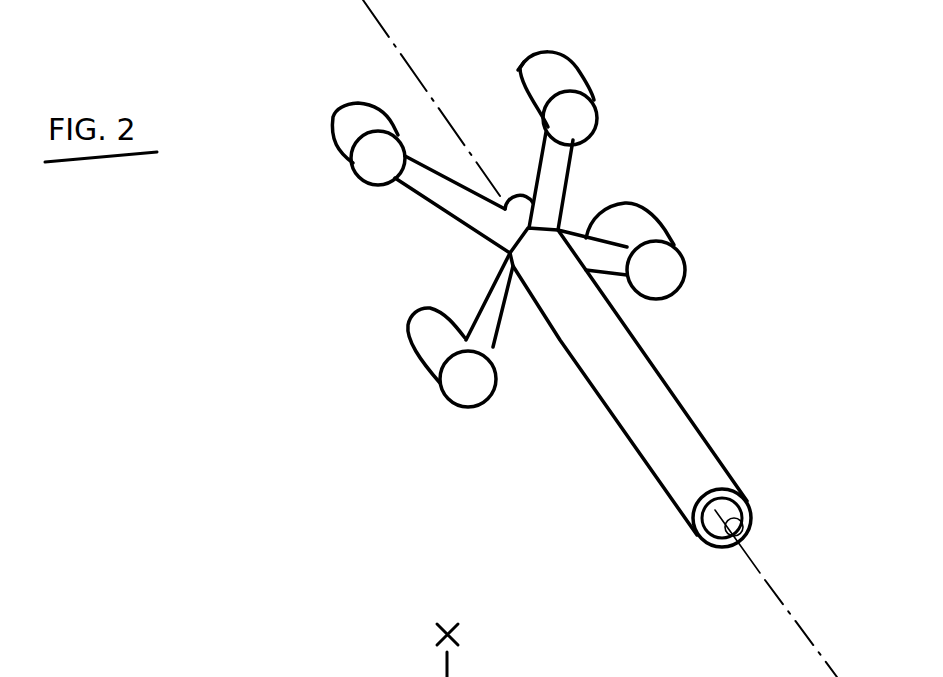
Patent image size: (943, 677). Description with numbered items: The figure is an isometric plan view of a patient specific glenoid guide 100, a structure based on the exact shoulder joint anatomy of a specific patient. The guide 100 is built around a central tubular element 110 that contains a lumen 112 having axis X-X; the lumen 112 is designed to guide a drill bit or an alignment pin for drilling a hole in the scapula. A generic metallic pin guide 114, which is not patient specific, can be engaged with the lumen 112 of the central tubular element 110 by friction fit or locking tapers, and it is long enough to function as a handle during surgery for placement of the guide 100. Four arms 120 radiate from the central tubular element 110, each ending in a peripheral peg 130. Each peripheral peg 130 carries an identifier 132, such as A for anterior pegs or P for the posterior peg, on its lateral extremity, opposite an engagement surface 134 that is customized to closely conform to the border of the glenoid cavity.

The guide 100 is at (725, 50).
The central tubular element 110 is at (508, 204).
The lumen 112 is at (743, 533).
The pin guide 114 is at (688, 410).
The arm 120 is at (414, 148).
The peripheral peg 130 is at (332, 141).
The identifier 132 is at (358, 165).
The engagement surface 134 is at (512, 74).